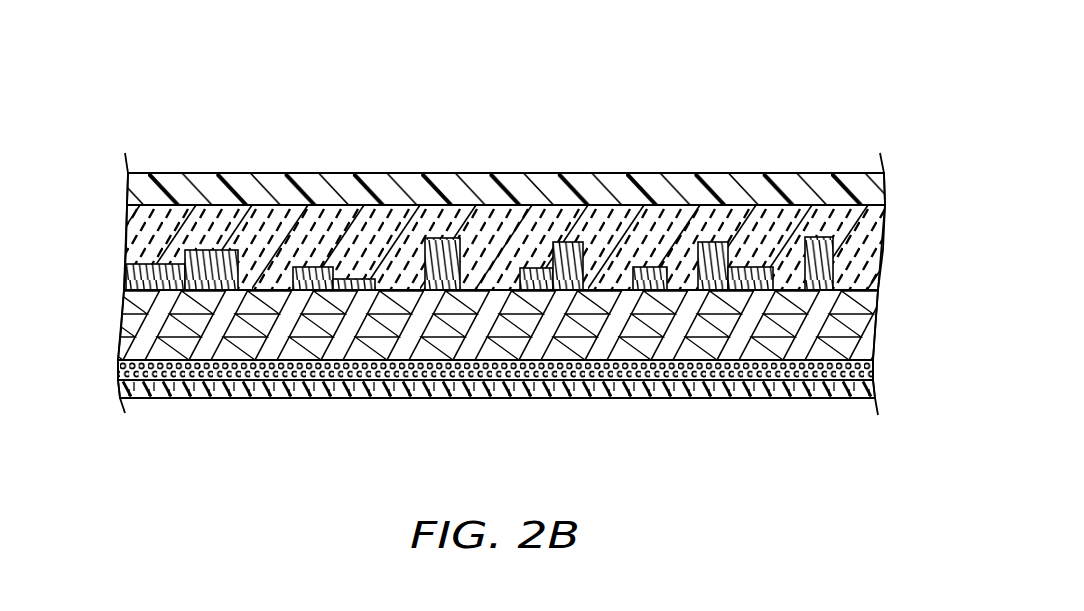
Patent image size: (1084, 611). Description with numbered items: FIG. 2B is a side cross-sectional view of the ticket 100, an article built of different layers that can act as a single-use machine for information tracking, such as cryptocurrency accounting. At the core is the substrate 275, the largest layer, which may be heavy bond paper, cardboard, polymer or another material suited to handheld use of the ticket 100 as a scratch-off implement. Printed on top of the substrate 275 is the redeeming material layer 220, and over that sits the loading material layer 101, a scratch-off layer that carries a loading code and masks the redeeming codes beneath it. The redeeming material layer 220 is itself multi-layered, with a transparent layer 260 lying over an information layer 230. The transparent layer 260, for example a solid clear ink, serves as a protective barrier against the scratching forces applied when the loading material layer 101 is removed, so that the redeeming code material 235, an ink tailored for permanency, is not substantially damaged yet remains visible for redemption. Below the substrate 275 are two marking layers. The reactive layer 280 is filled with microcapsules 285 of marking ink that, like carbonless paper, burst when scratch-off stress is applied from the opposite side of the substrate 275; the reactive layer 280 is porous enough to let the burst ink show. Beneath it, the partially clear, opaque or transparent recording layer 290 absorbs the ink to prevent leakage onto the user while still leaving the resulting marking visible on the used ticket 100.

The ticket 100 is at (215, 95).
The loading material layer 101 is at (865, 190).
The redeeming material layer 220 is at (499, 290).
The transparent layer 260 is at (126, 224).
The information layer 230 is at (124, 272).
The redeeming code material 235 is at (440, 238).
The substrate 275 is at (863, 341).
The reactive layer 280 is at (118, 372).
The microcapsules 285 is at (832, 378).
The recording layer 290 is at (865, 389).